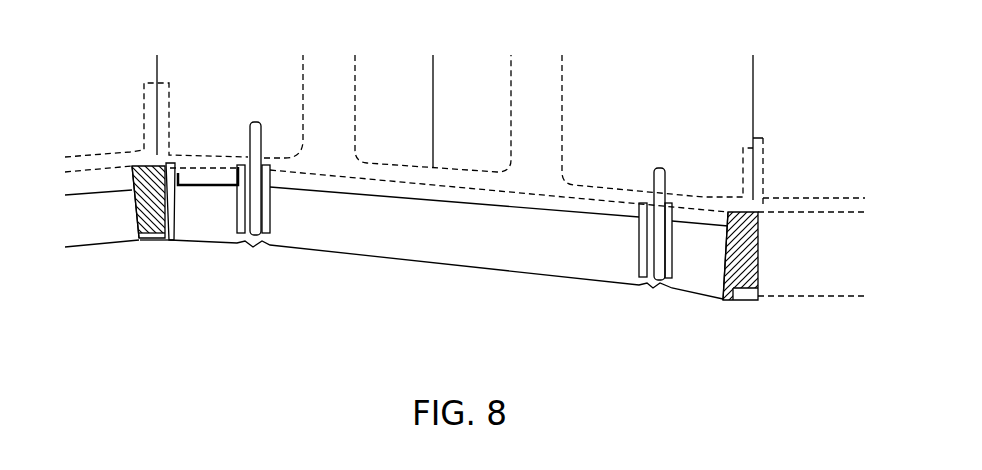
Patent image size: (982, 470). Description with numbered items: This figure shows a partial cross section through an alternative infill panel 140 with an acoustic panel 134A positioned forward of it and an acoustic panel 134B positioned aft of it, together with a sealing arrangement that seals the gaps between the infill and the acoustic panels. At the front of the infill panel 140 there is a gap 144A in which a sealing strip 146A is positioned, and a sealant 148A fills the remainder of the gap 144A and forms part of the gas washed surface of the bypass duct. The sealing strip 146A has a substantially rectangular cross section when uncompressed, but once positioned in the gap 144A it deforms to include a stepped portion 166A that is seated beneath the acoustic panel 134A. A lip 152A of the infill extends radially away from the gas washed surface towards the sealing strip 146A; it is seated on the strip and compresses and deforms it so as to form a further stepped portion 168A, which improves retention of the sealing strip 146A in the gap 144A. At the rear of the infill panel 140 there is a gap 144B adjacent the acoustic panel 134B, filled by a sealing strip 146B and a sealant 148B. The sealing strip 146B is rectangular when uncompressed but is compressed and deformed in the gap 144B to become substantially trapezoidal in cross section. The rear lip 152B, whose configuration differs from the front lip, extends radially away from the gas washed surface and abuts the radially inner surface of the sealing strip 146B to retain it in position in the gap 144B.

The infill panel 140 is at (465, 247).
The acoustic panel 134A is at (90, 229).
The acoustic panel 134B is at (865, 265).
The gap 144A is at (160, 257).
The gap 144B is at (788, 310).
The sealing strip 146A is at (132, 167).
The sealing strip 146B is at (763, 211).
The sealant 148A is at (148, 240).
The sealant 148B is at (747, 302).
The lip 152A is at (170, 240).
The lip 152B is at (728, 300).
The stepped portion 166A is at (132, 200).
The stepped portion 168A is at (172, 173).